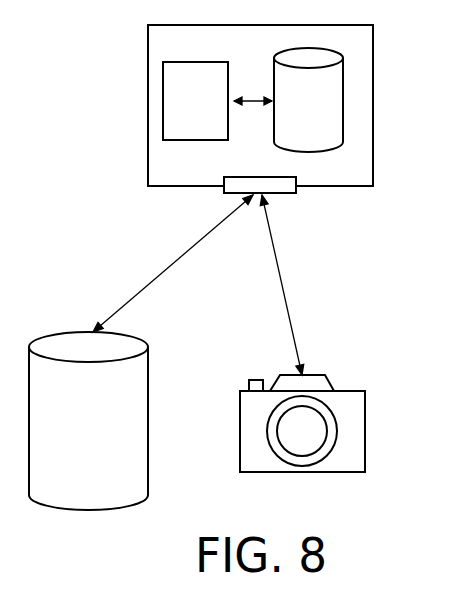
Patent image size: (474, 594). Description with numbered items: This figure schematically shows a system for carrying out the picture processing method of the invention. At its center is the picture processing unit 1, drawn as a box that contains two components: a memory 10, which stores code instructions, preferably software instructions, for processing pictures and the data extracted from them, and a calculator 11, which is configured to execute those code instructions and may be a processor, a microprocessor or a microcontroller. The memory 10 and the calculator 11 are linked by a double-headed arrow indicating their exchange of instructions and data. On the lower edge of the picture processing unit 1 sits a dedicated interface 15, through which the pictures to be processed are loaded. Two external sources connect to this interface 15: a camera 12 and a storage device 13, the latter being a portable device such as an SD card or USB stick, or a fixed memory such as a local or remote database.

The picture processing unit 1 is at (178, 184).
The memory 10 is at (343, 110).
The calculator 11 is at (181, 115).
The camera 12 is at (367, 430).
The storage device 13 is at (73, 437).
The dedicated interface 15 is at (288, 194).